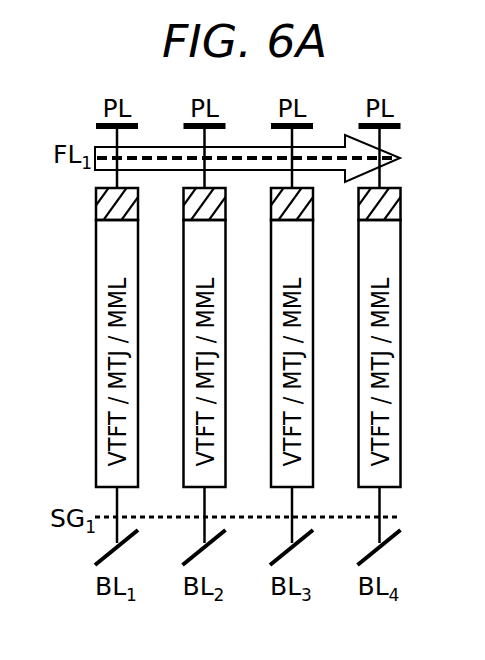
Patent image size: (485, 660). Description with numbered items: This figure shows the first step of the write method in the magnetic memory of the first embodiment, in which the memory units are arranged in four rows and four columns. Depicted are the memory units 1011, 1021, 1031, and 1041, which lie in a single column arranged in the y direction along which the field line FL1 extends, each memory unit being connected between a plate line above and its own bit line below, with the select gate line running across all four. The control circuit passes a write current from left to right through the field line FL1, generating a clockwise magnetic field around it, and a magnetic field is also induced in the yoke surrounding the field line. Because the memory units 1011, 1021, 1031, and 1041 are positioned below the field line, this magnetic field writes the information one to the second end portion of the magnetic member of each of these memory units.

The memory unit 1011 is at (150, 343).
The memory unit 1021 is at (238, 343).
The memory unit 1031 is at (325, 343).
The memory unit 1041 is at (412, 343).